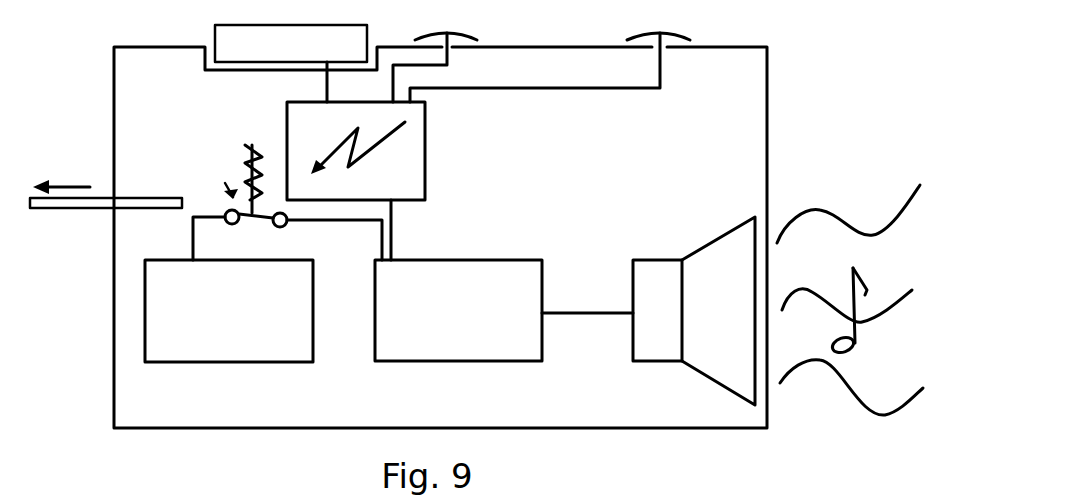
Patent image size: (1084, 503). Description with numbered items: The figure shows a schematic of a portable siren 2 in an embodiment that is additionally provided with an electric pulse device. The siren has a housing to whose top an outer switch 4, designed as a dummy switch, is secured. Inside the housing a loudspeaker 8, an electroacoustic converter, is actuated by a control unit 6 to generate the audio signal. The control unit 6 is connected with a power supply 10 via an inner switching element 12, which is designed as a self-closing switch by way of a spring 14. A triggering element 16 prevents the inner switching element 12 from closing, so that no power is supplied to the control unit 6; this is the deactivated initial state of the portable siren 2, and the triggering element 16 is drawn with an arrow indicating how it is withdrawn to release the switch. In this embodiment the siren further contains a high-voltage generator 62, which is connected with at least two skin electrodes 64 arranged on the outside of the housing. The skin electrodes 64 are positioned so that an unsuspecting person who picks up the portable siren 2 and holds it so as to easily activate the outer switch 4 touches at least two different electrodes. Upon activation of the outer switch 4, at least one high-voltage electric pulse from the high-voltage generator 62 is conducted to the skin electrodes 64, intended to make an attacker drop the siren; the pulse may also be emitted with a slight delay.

The portable siren 2 is at (782, 34).
The outer switch 4 is at (291, 63).
The control unit 6 is at (504, 310).
The loudspeaker 8 is at (694, 311).
The power supply 10 is at (229, 311).
The inner switching element 12 is at (240, 162).
The spring 14 is at (220, 186).
The triggering element 16 is at (98, 215).
The high-voltage generator 62 is at (418, 142).
The skin electrodes 64 is at (541, 54).